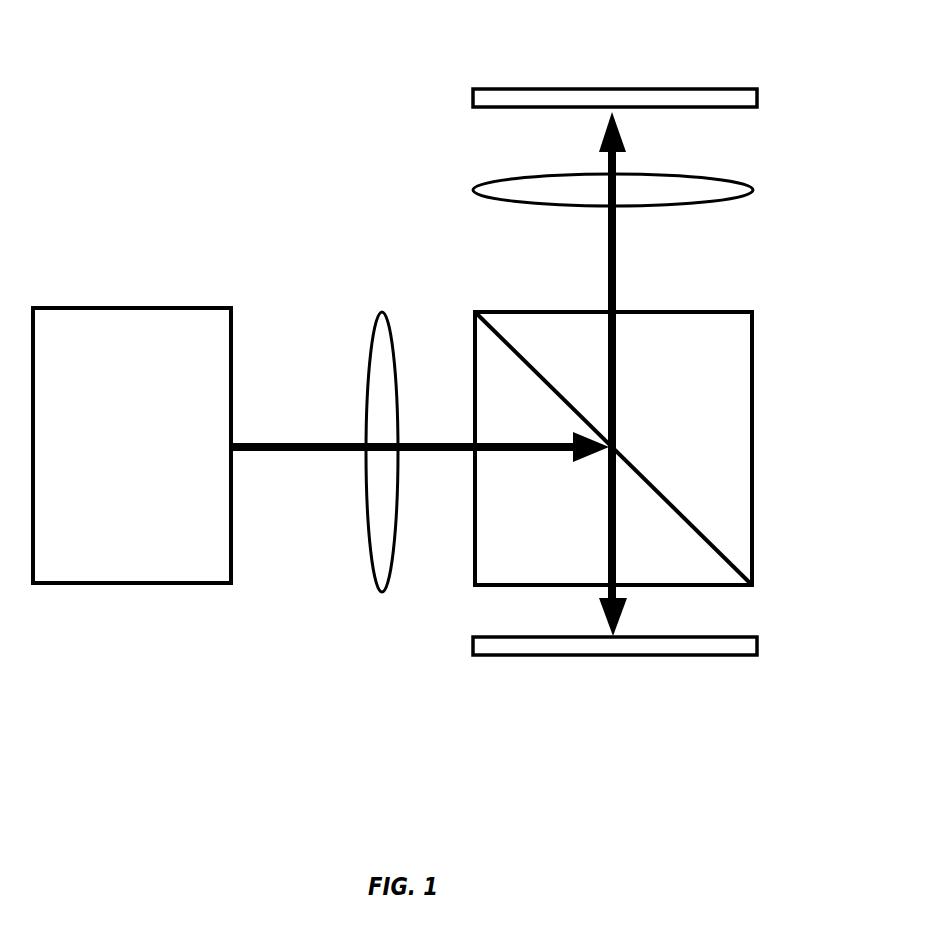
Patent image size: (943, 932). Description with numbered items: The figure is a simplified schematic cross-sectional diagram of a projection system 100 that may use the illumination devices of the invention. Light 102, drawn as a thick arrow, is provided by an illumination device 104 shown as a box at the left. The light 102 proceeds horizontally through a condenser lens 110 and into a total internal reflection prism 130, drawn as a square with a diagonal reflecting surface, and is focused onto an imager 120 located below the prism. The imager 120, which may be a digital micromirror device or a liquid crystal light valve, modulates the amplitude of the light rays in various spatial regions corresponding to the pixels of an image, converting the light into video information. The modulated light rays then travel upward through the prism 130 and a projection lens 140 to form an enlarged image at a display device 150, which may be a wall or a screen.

The projection system 100 is at (252, 36).
The light 102 is at (421, 460).
The illumination device 104 is at (132, 445).
The condenser lens 110 is at (383, 347).
The imager 120 is at (673, 650).
The total internal reflection (TIR) prism 130 is at (730, 413).
The projection lens 140 is at (713, 192).
The display device 150 is at (737, 95).